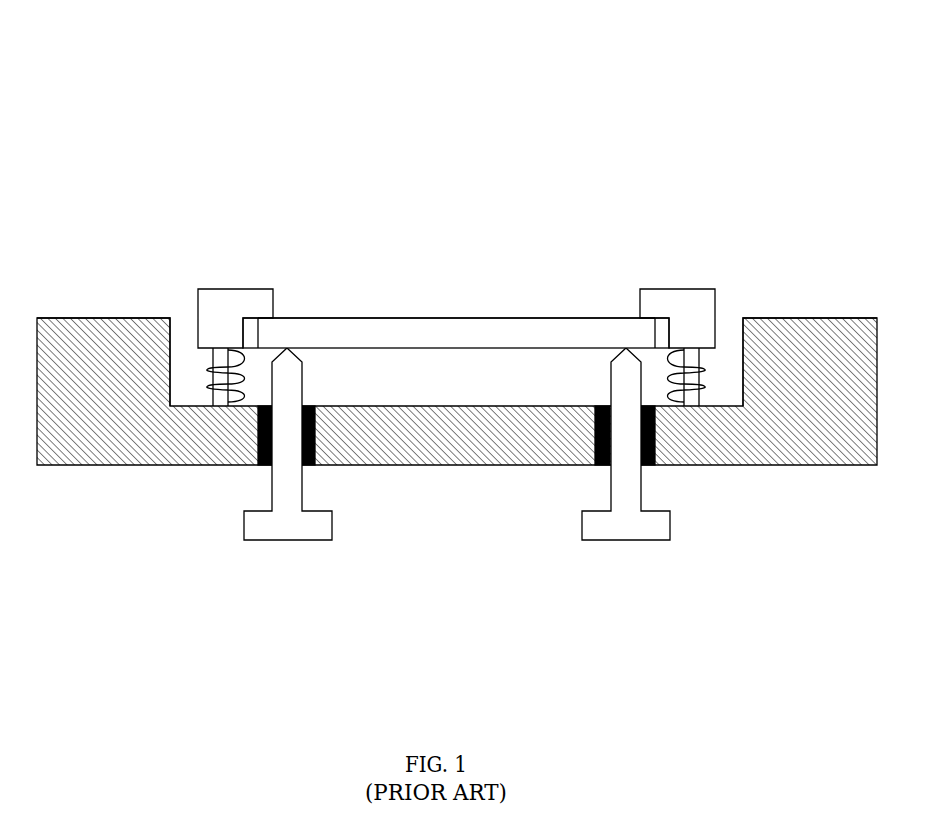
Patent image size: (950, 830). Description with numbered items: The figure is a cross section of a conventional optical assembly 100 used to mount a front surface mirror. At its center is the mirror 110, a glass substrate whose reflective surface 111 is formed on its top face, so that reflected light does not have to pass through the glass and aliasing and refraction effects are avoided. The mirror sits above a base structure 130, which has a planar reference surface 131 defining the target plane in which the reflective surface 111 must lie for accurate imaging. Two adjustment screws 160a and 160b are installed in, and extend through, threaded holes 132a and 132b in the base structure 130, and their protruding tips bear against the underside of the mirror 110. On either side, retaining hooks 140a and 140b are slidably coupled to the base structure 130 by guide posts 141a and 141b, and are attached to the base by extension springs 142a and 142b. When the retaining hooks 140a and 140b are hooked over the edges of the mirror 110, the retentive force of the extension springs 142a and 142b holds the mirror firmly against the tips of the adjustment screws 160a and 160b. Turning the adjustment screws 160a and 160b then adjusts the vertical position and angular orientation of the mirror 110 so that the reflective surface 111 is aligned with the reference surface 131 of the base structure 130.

The optical assembly 100 is at (86, 73).
The mirror 110 is at (552, 330).
The reflective surface 111 is at (345, 317).
The base structure 130 is at (485, 458).
The planar reference surface 131 is at (118, 317).
The threaded hole 132a is at (318, 440).
The threaded hole 132b is at (593, 438).
The retaining hook 140a is at (228, 288).
The retaining hook 140b is at (685, 288).
The guide post 141a is at (213, 400).
The guide post 141b is at (702, 406).
The extension spring 142a is at (207, 367).
The extension spring 142b is at (700, 373).
The adjustment screw 160a is at (273, 540).
The adjustment screw 160b is at (642, 540).